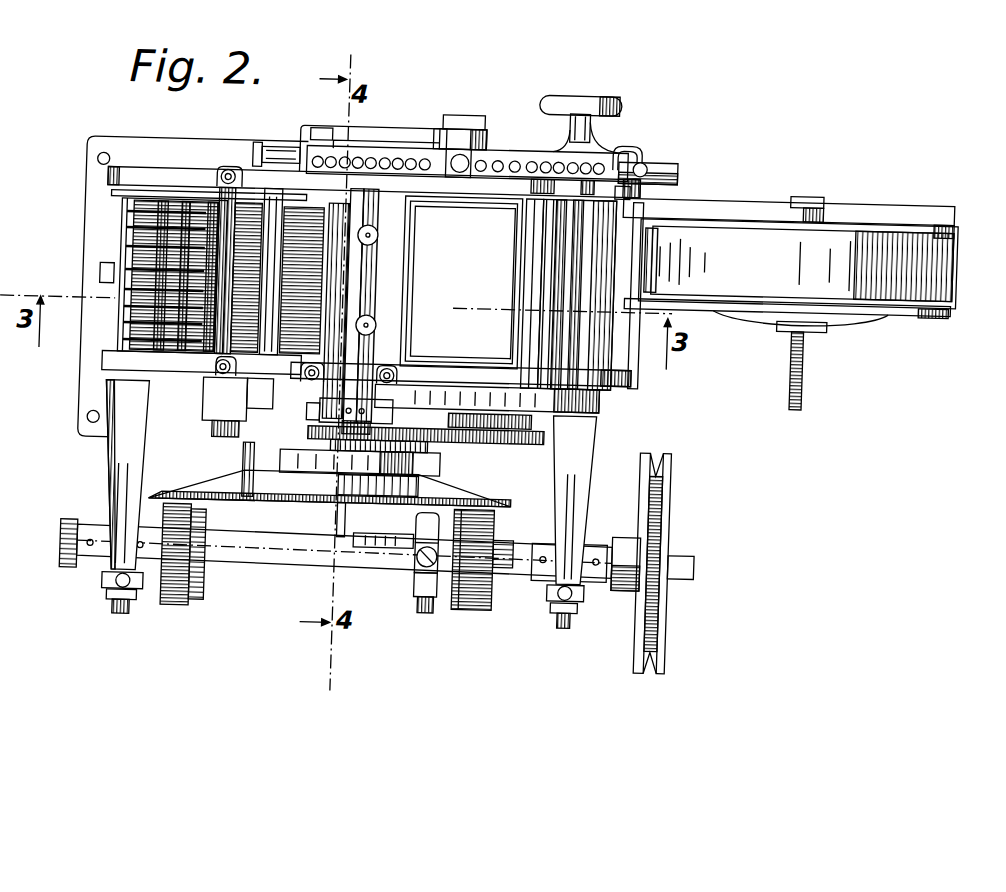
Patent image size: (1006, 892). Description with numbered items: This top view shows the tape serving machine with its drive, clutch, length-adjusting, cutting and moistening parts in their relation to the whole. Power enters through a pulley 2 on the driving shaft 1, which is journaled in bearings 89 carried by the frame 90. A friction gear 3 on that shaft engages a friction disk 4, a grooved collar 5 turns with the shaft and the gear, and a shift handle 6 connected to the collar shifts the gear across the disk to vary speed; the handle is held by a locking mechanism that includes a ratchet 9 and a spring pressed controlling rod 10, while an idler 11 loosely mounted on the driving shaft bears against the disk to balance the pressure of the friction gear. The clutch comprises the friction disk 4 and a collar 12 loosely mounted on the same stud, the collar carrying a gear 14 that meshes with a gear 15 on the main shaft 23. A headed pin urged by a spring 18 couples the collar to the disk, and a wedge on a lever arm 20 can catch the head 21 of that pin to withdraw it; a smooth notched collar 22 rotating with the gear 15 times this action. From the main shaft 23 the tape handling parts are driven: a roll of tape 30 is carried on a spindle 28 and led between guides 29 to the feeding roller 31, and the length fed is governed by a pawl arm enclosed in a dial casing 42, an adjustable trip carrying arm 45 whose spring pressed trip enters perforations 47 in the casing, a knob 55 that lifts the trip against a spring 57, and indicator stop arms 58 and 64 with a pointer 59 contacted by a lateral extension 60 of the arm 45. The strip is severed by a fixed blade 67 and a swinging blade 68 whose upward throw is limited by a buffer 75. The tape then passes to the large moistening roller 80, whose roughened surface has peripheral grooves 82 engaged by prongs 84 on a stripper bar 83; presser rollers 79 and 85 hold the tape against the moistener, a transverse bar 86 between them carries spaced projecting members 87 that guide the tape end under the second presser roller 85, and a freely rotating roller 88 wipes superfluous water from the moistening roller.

The driving shaft 1 is at (273, 555).
The pulley 2 is at (668, 621).
The friction gear 3 is at (475, 602).
The friction disk 4 is at (228, 498).
The grooved collar 5 is at (420, 522).
The shift handle 6 is at (423, 560).
The ratchet 9 is at (377, 541).
The spring pressed controlling rod 10 is at (418, 598).
The idler 11 is at (187, 607).
The collar 12 is at (259, 461).
The gear 14 is at (309, 432).
The gear 15 is at (509, 443).
The spring 18 is at (294, 471).
The lever arm 20 is at (209, 435).
The head 21 is at (310, 459).
The smooth collar 22 is at (561, 416).
The main shaft 23 is at (449, 113).
The spindle 28 is at (802, 360).
The guides 29 is at (598, 383).
The tape 30 is at (908, 234).
The feeding roller 31 is at (406, 157).
The dial casing 42 is at (604, 153).
The trip carrying arm 45 is at (548, 141).
The perforations 47 is at (512, 157).
The knob 55 is at (583, 103).
The spring 57 is at (671, 163).
The arm 58 is at (471, 125).
The pointer 59 is at (397, 148).
The lateral extension 60 is at (639, 161).
The arm 64 is at (313, 130).
The fixed blade 67 is at (364, 298).
The swinging blade 68 is at (351, 344).
The buffer 75 is at (356, 274).
The presser roller 79 is at (277, 218).
The moistening roller 80 is at (121, 219).
The peripheral grooves 82 is at (173, 205).
The bar 83 is at (123, 267).
The prongs 84 is at (136, 213).
The presser roller 85 is at (202, 218).
The transverse bar 86 is at (264, 228).
The projecting members 87 is at (245, 347).
The freely rotating roller 88 is at (321, 142).
The bearings 89 is at (124, 524).
The frame 90 is at (109, 367).